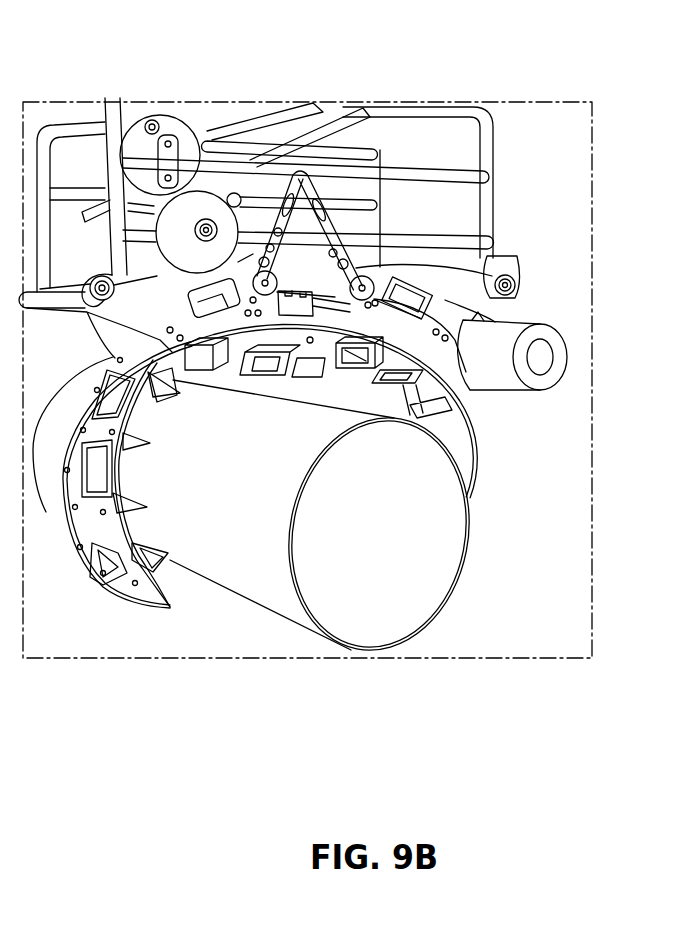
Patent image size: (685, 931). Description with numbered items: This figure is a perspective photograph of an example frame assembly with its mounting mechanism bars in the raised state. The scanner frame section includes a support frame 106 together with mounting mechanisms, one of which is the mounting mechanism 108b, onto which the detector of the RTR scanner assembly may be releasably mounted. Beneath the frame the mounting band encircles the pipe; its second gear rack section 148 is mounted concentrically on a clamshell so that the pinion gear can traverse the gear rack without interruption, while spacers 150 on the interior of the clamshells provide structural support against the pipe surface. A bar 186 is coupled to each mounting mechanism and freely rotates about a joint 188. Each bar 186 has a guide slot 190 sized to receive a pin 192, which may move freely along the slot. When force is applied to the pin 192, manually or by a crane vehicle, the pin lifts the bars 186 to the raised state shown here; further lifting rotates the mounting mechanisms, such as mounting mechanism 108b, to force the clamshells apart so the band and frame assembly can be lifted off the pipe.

The support frame 106 is at (497, 173).
The mounting mechanism 108b is at (467, 287).
The second gear rack section 148 is at (98, 437).
The spacers 150 is at (465, 407).
The bar 186 is at (264, 263).
The joint 188 is at (374, 286).
The guide slot 190 is at (282, 199).
The pin 192 is at (300, 175).